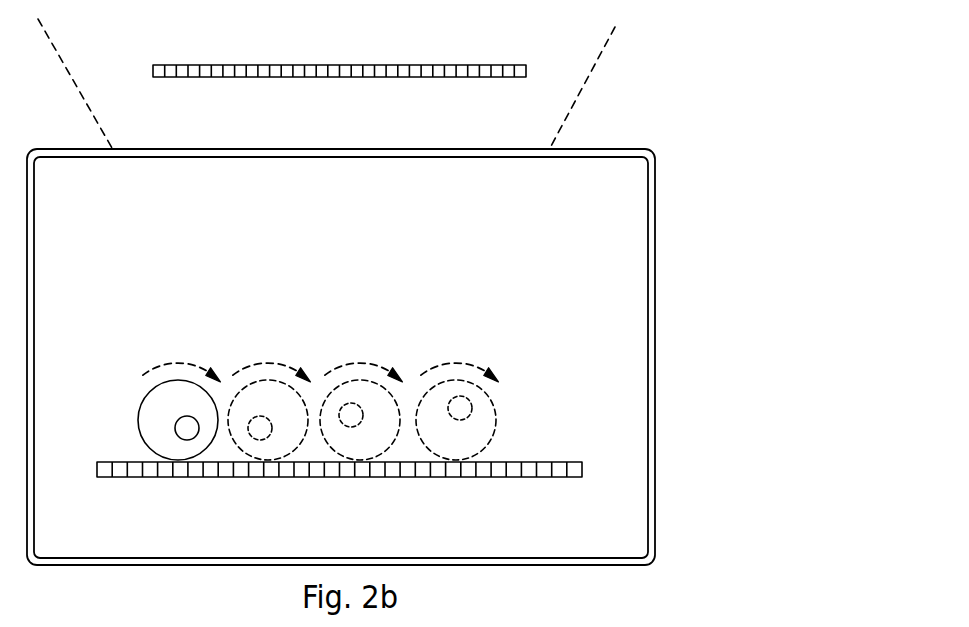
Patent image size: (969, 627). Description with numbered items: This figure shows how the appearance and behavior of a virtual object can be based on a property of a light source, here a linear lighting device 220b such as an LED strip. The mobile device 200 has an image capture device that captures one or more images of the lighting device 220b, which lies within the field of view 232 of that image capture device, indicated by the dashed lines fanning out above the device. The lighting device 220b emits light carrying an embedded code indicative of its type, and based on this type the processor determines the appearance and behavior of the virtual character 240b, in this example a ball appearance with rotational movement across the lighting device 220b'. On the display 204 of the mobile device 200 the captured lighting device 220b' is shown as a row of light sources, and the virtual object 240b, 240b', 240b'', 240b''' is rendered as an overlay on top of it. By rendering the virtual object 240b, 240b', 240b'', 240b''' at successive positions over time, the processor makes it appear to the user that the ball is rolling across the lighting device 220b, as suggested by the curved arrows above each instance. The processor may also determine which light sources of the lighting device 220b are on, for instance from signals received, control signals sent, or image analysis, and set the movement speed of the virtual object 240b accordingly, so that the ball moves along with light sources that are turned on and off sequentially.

The mobile device 200 is at (655, 500).
The display 204 is at (633, 353).
The field of view 232 is at (605, 44).
The linear lighting device 220b is at (339, 102).
The lighting device 220b' is at (339, 500).
The virtual character 240b is at (172, 364).
The virtual object 240b' is at (262, 364).
The virtual object 240b'' is at (353, 364).
The virtual object 240b''' is at (453, 364).